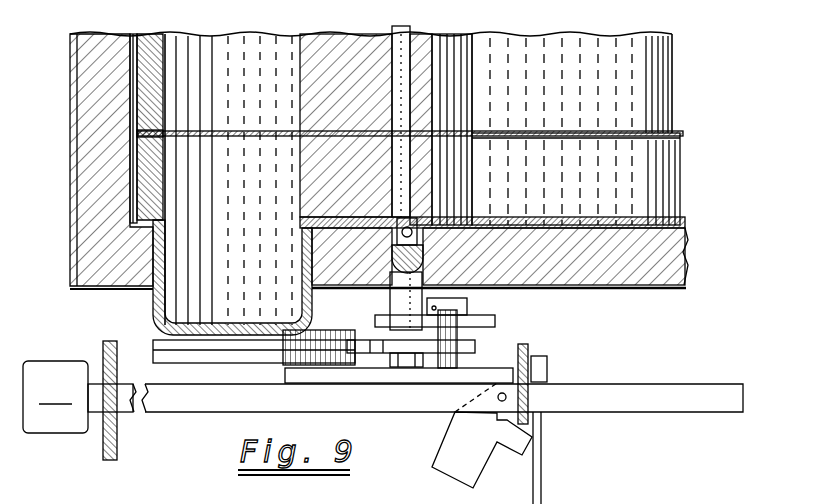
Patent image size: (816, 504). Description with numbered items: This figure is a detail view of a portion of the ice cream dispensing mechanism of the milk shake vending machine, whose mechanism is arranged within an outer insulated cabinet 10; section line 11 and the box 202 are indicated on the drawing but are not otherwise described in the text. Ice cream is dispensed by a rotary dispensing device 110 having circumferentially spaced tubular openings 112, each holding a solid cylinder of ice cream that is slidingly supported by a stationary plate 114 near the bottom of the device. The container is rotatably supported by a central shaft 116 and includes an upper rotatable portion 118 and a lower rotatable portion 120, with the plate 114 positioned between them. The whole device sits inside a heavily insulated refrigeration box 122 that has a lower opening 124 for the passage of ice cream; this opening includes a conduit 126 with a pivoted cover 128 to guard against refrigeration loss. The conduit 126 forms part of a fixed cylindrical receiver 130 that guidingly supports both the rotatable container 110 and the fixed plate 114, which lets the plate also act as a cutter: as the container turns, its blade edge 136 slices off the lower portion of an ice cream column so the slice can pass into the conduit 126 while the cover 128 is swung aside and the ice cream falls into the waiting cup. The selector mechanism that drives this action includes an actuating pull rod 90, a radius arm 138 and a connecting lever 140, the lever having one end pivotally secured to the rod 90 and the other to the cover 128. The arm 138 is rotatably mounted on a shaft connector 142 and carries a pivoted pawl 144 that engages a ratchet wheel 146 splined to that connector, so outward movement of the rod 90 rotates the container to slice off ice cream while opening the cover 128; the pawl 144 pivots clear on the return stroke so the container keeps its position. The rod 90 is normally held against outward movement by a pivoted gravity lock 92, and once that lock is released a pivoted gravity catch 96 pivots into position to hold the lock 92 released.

The outer insulated cabinet 10 is at (150, 296).
The section line 11 is at (70, 133).
The actuating pull rod 90 is at (616, 397).
The pivoted gravity lock 92 is at (541, 480).
The pivoted gravity catch 96 is at (447, 443).
The rotary dispensing device 110 is at (675, 72).
The tubular openings 112 is at (185, 35).
The stationary plate 114 is at (314, 130).
The central shaft 116 is at (392, 30).
The upper rotatable portion 118 is at (307, 62).
The lower rotatable portion 120 is at (300, 180).
The refrigeration box 122 is at (70, 262).
The lower opening 124 is at (312, 260).
The conduit 126 is at (279, 232).
The pivoted cover 128 is at (210, 353).
The fixed cylindrical receiver 130 is at (672, 184).
The blade edge 136 is at (262, 138).
The radius arm 138 is at (495, 318).
The connecting lever 140 is at (358, 372).
The shaft connector 142 is at (390, 300).
The pivoted pawl 144 is at (437, 333).
The ratchet wheel 146 is at (478, 347).
The box 202 is at (55, 397).